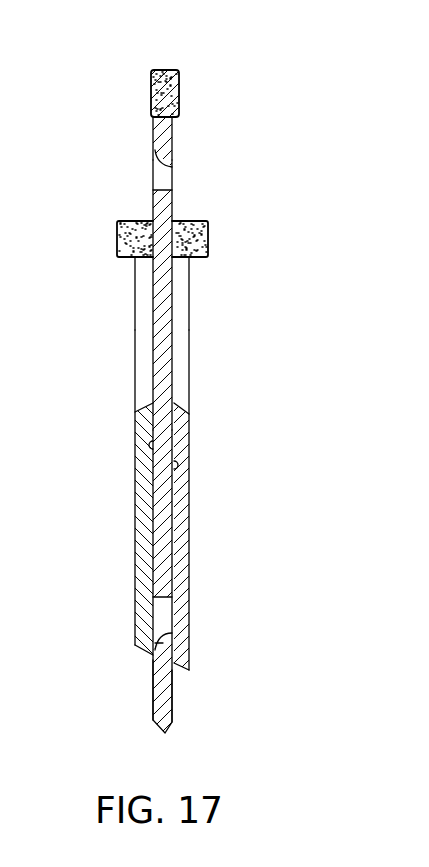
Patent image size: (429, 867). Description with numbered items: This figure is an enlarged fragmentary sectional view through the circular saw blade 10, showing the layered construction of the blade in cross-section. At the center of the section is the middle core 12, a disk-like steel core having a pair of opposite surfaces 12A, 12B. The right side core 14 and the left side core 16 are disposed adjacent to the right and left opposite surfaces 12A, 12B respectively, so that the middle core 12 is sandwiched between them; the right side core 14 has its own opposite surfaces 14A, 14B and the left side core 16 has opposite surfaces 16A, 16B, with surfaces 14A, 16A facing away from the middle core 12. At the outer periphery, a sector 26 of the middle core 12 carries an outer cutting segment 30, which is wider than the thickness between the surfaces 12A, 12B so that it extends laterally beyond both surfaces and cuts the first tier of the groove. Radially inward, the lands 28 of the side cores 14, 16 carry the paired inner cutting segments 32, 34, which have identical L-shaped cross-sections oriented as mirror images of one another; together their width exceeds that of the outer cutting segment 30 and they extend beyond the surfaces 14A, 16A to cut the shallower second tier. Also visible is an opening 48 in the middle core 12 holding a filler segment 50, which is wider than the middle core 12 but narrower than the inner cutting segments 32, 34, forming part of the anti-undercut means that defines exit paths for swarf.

The circular saw blade 10 is at (214, 109).
The middle core 12 is at (164, 432).
The right opposite surface of middle core 12A is at (172, 688).
The left opposite surface of middle core 12B is at (153, 688).
The right side core 14 is at (194, 552).
The outer surface of right side core 14A is at (189, 503).
The inner surface of right side core 14B is at (178, 465).
The left side core 16 is at (130, 545).
The outer surface of left side core 16A is at (135, 503).
The inner surface of left side core 16B is at (148, 455).
The sectors 26 is at (155, 128).
The lands 28 is at (147, 265).
The outer cutting segments 30 is at (150, 92).
The inner cutting segments on right side core 32 is at (208, 235).
The inner cutting segments on left side core 34 is at (117, 235).
The openings 48 is at (174, 167).
The filler segments 50 is at (165, 378).